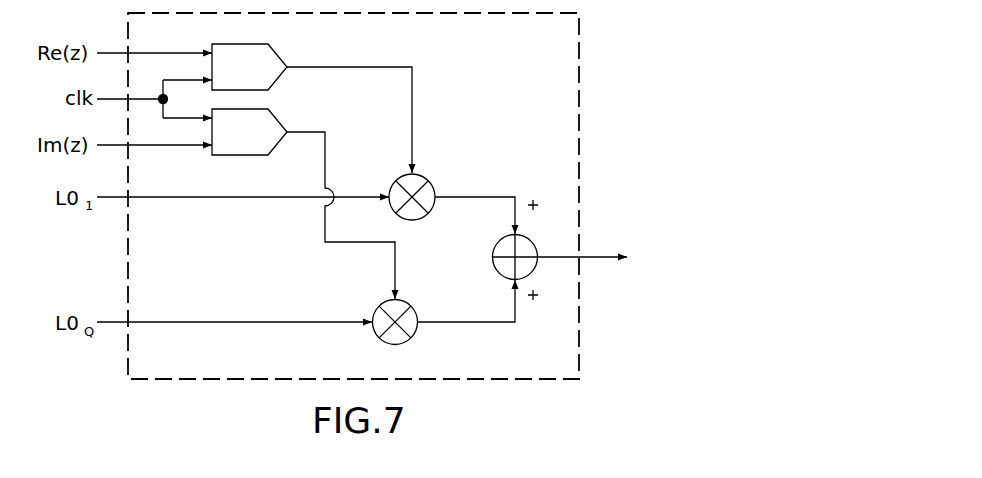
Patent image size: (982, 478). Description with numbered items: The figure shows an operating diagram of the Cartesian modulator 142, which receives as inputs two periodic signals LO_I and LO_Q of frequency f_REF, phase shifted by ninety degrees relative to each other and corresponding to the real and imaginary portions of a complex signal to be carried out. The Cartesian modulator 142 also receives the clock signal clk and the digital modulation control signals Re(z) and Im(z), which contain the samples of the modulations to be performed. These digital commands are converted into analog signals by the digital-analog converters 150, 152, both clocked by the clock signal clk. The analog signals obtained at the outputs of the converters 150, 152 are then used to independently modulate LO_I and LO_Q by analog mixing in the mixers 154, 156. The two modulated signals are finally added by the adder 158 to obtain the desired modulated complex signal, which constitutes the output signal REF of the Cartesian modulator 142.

The Cartesian modulator 142 is at (579, 58).
The digital-analog converter 150 is at (270, 49).
The digital-analog converter 152 is at (270, 113).
The mixer 154 is at (430, 186).
The mixer 156 is at (413, 335).
The adder 158 is at (500, 266).